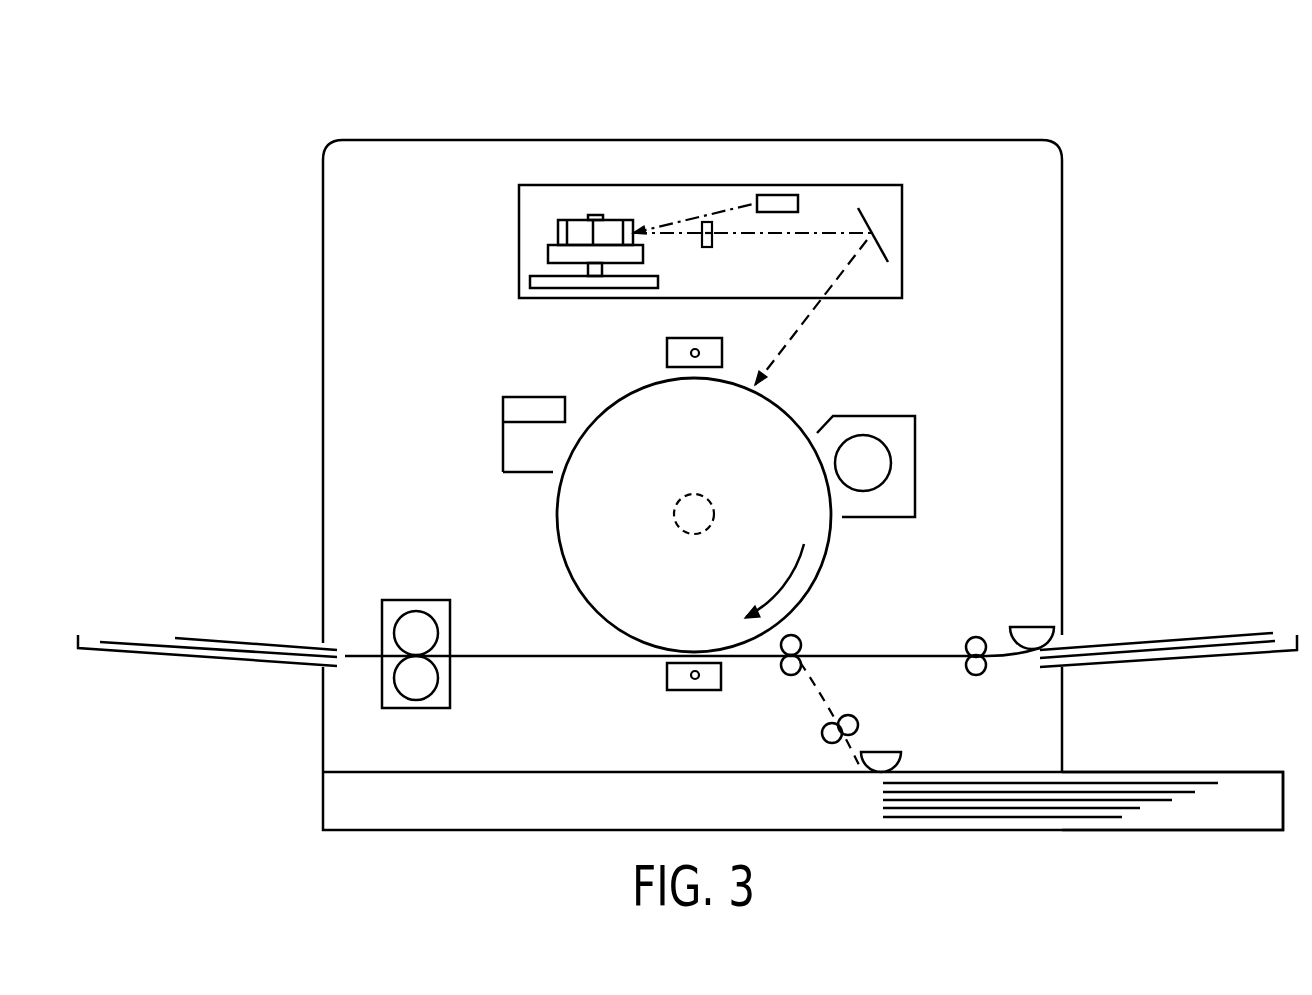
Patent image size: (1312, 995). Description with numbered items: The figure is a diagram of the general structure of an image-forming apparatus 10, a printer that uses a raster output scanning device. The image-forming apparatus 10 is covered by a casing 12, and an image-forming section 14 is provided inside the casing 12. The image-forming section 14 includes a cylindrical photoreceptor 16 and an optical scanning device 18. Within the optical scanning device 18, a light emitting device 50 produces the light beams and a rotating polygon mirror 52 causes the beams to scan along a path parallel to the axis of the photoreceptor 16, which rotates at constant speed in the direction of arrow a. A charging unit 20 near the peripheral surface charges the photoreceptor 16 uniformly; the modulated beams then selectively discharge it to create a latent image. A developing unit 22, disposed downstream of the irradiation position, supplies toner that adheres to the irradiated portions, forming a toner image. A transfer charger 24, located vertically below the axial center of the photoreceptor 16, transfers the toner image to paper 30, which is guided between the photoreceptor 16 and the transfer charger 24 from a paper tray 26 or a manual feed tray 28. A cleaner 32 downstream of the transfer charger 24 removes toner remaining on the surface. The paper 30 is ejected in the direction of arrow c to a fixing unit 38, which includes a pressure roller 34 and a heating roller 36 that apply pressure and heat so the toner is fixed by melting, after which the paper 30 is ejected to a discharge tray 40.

The image-forming apparatus 10 is at (1025, 92).
The casing 12 is at (1063, 240).
The image-forming section 14 is at (420, 250).
The photoreceptor 16 is at (565, 562).
The optical scanning device 18 is at (902, 240).
The charging unit 20 is at (665, 353).
The developing unit 22 is at (915, 465).
The transfer charger 24 is at (693, 692).
The paper tray 26 is at (1270, 772).
The manual feed tray 28 is at (1220, 657).
The paper 30 is at (928, 657).
The cleaner 32 is at (502, 442).
The pressure roller 34 is at (415, 613).
The heating roller 36 is at (415, 708).
The fixing unit 38 is at (452, 620).
The discharge tray 40 is at (175, 657).
The light emitting device 50 is at (800, 204).
The polygon mirror 52 is at (558, 237).